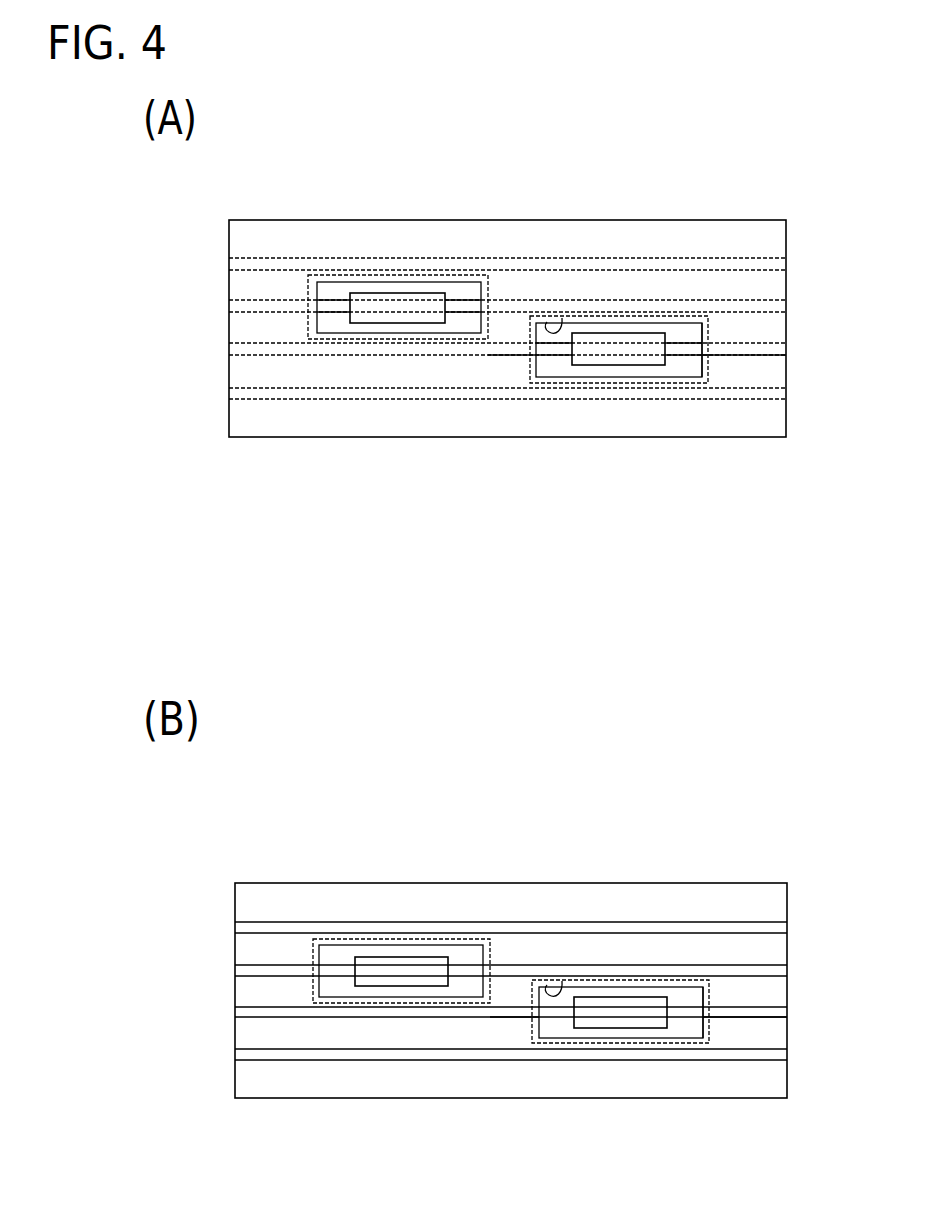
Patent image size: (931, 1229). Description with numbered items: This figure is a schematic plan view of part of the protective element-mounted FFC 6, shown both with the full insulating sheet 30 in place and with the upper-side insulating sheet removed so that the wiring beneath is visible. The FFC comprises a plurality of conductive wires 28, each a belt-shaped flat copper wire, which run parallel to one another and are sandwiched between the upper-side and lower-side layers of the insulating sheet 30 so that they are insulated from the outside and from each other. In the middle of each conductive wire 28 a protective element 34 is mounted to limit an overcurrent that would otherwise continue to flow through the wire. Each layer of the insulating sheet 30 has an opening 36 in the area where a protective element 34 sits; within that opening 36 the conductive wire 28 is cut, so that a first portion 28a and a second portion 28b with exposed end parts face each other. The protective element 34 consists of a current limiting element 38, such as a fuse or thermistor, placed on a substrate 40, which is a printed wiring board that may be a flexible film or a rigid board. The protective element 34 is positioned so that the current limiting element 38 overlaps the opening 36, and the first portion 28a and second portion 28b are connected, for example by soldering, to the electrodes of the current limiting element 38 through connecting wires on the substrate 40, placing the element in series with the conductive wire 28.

The protective element-mounted FFC 6 is at (523, 482).
The conductive wire 28 is at (760, 270).
The first portion of conductive wire 28a is at (522, 357).
The second portion of conductive wire 28b is at (711, 360).
The insulating sheet 30 is at (776, 198).
The protective element 34 is at (712, 332).
The opening 36 is at (562, 318).
The current limiting element 38 is at (617, 366).
The substrate 40 is at (722, 372).